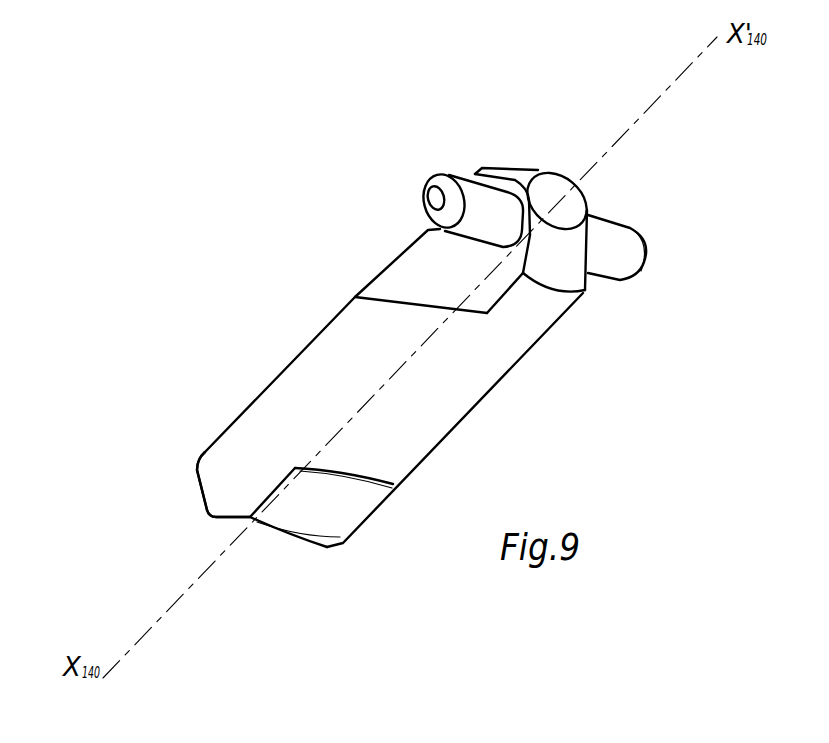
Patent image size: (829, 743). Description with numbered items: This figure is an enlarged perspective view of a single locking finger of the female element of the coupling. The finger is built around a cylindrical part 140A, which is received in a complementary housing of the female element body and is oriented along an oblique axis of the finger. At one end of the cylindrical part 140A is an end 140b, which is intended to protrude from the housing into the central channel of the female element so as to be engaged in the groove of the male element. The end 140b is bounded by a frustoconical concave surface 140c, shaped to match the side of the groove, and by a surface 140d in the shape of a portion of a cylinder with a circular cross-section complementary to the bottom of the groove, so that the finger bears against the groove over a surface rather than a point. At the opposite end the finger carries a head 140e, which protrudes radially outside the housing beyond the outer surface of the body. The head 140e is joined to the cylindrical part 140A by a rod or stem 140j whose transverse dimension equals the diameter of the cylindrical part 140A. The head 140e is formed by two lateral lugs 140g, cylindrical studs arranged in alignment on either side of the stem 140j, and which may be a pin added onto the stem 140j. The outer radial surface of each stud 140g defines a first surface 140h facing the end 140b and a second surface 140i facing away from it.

The cylindrical part 140A is at (388, 359).
The end 140b is at (232, 483).
The frustoconical concave surface 140c is at (340, 505).
The surface in the shape of a portion of a cylinder 140d is at (193, 484).
The head 140e is at (552, 280).
The lateral lugs 140g is at (497, 203).
The first surface 140h is at (466, 238).
The second surface 140i is at (483, 185).
The rod or stem 140j is at (538, 310).